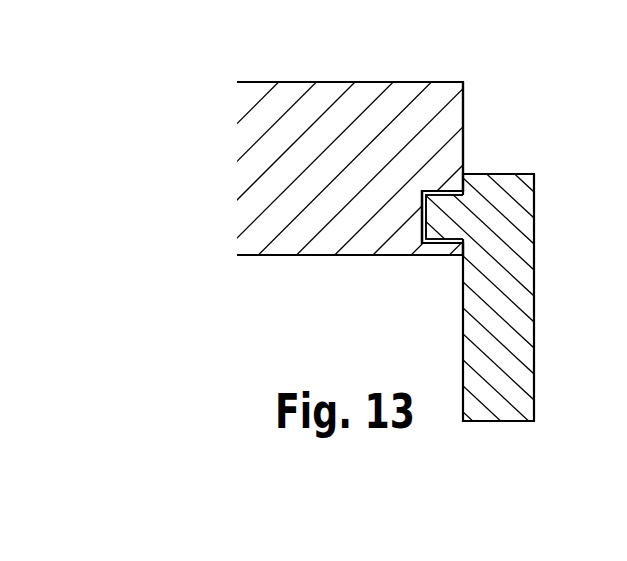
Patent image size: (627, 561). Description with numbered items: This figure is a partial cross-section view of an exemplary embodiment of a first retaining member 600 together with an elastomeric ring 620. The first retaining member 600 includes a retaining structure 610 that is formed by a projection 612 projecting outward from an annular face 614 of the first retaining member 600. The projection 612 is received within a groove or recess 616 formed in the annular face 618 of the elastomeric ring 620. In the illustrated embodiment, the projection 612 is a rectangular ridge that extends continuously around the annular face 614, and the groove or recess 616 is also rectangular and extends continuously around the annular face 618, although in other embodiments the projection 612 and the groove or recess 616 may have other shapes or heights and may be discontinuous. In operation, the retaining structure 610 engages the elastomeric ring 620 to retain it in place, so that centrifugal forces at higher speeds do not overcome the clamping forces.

The first retaining member 600 is at (507, 230).
The retaining structure 610 is at (392, 203).
The projection 612 is at (432, 208).
The annular face 614 is at (461, 250).
The groove or recess 616 is at (450, 199).
The annular face 618 is at (463, 107).
The elastomeric ring 620 is at (362, 93).